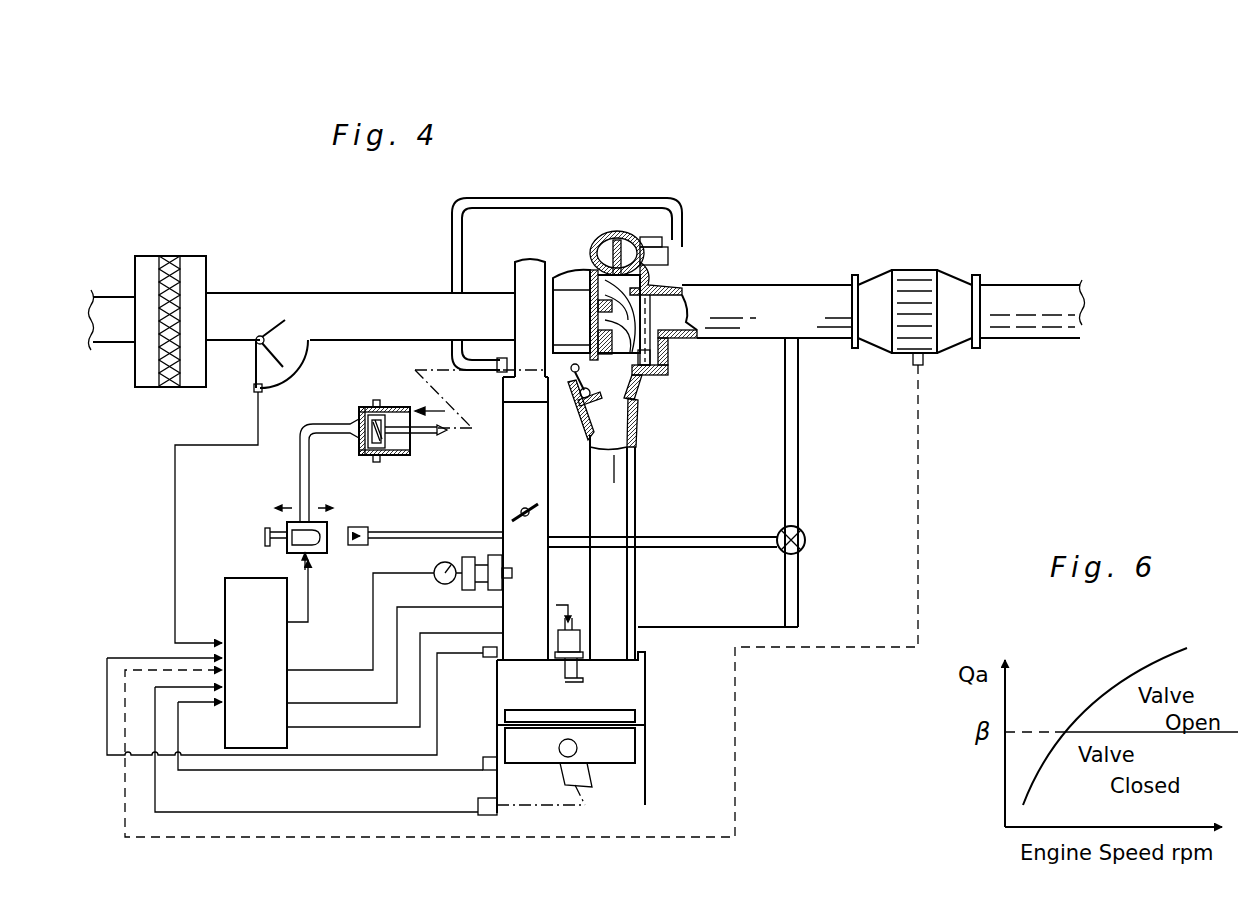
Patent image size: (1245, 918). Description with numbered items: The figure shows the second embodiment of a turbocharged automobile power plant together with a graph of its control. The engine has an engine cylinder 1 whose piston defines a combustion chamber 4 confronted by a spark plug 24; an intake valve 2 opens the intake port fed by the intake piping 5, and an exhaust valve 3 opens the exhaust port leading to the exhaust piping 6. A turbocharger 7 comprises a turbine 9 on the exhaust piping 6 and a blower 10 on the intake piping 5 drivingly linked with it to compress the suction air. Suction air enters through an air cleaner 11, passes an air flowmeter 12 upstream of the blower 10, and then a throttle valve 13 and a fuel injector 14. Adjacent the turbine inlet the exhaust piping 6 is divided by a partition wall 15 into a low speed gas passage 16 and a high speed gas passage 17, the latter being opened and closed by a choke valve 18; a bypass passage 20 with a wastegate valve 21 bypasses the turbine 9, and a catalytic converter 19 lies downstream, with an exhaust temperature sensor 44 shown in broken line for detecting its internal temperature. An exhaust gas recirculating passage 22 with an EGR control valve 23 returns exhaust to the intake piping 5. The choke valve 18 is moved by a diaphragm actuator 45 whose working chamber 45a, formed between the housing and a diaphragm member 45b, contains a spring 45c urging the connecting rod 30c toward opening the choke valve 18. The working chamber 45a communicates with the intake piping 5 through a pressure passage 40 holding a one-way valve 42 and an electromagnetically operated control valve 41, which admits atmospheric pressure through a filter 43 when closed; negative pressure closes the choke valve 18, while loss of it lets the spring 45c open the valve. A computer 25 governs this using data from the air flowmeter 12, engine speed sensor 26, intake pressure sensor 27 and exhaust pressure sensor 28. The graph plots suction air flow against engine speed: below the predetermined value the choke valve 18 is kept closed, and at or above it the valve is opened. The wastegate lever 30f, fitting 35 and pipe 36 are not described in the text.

The engine cylinder 1 is at (650, 742).
The intake valve 2 is at (525, 557).
The exhaust valve 3 is at (625, 672).
The combustion chamber 4 is at (552, 712).
The intake piping 5 is at (353, 293).
The exhaust piping 6 is at (810, 285).
The turbocharger 7 is at (570, 262).
The turbine 9 is at (620, 237).
The blower 10 is at (523, 262).
The air cleaner 11 is at (150, 253).
The air flowmeter 12 is at (250, 372).
The throttle valve 13 is at (530, 505).
The fuel injector 14 is at (436, 566).
The partition wall 15 is at (630, 400).
The low speed gas passage 16 is at (645, 385).
The high speed gas passage 17 is at (598, 372).
The choke valve 18 is at (612, 420).
The catalytic converter 19 is at (915, 270).
The bypass passage 20 is at (668, 345).
The wastegate valve 21 is at (660, 362).
The exhaust gas recirculating passage 22 is at (798, 440).
The EGR control valve 23 is at (805, 540).
The spark plug 24 is at (585, 678).
The computer 25 is at (240, 578).
The engine speed sensor 26 is at (480, 805).
The intake pressure sensor 27 is at (488, 657).
The exhaust pressure sensor 28 is at (488, 757).
The connecting rod 30c is at (437, 435).
The waste gate valve 30f is at (570, 372).
The pipe fitting 35 is at (668, 255).
The bypass pipe 36 is at (665, 198).
The pressure passage 40 is at (428, 532).
The electromagnetically operated control valve 41 is at (321, 558).
The one-way valve 42 is at (358, 527).
The filter 43 is at (268, 528).
The exhaust temperature sensor 44 is at (925, 365).
The actuator 45 is at (380, 405).
The working chamber 45a is at (373, 402).
The diaphragm member 45b is at (380, 458).
The spring 45c is at (357, 437).